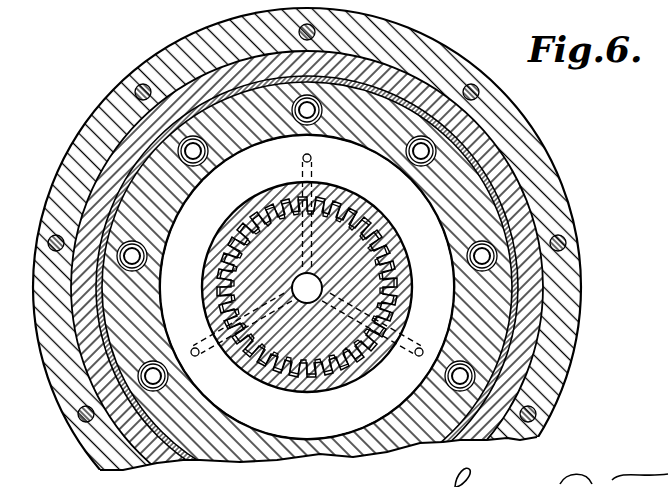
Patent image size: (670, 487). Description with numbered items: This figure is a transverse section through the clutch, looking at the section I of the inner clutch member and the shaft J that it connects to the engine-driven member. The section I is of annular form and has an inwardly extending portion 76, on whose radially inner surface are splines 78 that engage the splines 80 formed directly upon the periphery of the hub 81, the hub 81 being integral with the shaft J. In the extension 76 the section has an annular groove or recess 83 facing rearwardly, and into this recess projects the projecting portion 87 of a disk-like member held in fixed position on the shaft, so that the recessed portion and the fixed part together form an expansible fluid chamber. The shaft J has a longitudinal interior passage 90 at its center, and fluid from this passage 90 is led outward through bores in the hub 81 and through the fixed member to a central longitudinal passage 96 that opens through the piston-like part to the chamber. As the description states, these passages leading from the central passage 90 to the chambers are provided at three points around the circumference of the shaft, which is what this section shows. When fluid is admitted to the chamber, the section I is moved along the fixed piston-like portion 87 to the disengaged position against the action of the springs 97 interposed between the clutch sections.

The section of inner clutch member I is at (458, 179).
The inwardly extending portion 76 is at (475, 207).
The springs 97 is at (517, 238).
The annular groove or recess 83 is at (167, 231).
The projecting portion 87 is at (197, 271).
The splines 78 is at (363, 217).
The hub 81 is at (275, 245).
The splines 80 is at (328, 213).
The shaft J is at (363, 266).
The central longitudinal passage 96 is at (422, 350).
The longitudinal interior passage 90 is at (322, 289).